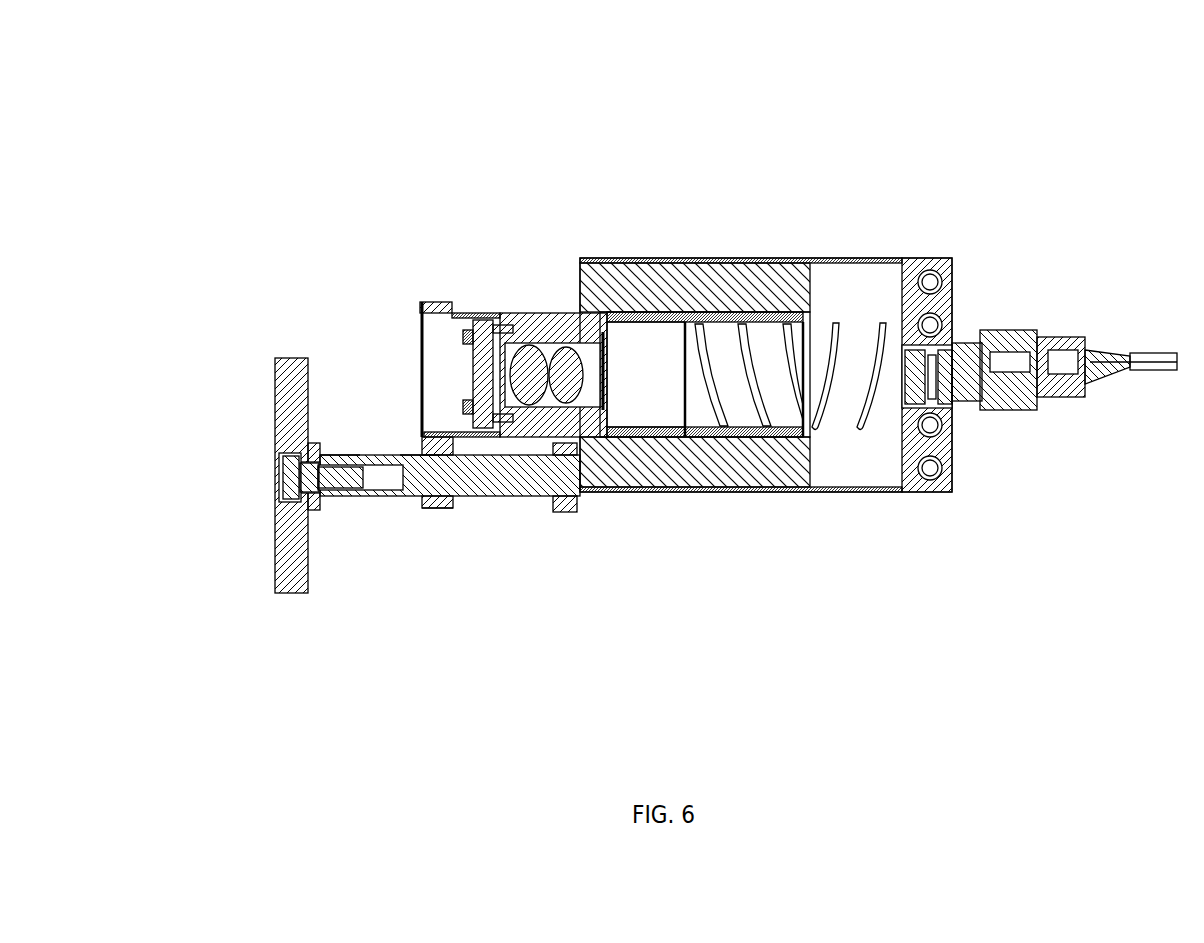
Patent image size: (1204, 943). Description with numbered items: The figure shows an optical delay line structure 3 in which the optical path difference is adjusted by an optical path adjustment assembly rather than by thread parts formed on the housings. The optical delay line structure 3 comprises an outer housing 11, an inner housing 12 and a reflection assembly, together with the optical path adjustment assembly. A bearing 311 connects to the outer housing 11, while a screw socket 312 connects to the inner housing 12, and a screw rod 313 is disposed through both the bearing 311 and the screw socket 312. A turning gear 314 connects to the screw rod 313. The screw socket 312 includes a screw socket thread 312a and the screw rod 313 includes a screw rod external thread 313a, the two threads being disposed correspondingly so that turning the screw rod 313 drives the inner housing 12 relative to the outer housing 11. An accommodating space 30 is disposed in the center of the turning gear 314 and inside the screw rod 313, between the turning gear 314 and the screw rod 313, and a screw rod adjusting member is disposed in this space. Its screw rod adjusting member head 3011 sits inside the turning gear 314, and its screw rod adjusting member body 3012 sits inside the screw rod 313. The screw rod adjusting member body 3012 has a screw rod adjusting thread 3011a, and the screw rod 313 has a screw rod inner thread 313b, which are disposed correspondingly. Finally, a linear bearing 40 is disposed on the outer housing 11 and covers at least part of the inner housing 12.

The optical delay line structure 3 is at (668, 361).
The outer housing 11 is at (773, 258).
The inner housing 12 is at (577, 310).
The accommodating space 30 is at (375, 456).
The linear bearing 40 is at (688, 463).
The bearing 311 is at (563, 510).
The screw socket 312 is at (423, 558).
The screw socket thread 312a is at (452, 508).
The screw rod 313 is at (381, 427).
The screw rod external thread 313a is at (420, 453).
The screw rod inner thread 313b is at (340, 457).
The screw rod adjusting member head 3011 is at (266, 500).
The screw rod adjusting thread 3011a is at (302, 458).
The screw rod adjusting member body 3012 is at (348, 497).
The turning gear 314 is at (290, 570).